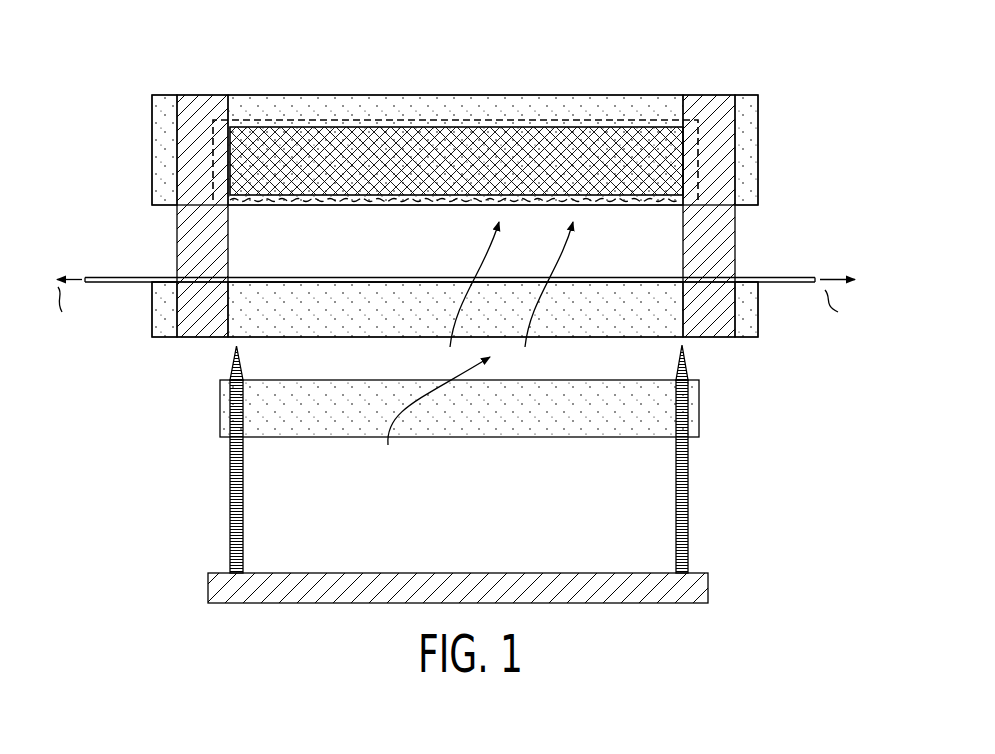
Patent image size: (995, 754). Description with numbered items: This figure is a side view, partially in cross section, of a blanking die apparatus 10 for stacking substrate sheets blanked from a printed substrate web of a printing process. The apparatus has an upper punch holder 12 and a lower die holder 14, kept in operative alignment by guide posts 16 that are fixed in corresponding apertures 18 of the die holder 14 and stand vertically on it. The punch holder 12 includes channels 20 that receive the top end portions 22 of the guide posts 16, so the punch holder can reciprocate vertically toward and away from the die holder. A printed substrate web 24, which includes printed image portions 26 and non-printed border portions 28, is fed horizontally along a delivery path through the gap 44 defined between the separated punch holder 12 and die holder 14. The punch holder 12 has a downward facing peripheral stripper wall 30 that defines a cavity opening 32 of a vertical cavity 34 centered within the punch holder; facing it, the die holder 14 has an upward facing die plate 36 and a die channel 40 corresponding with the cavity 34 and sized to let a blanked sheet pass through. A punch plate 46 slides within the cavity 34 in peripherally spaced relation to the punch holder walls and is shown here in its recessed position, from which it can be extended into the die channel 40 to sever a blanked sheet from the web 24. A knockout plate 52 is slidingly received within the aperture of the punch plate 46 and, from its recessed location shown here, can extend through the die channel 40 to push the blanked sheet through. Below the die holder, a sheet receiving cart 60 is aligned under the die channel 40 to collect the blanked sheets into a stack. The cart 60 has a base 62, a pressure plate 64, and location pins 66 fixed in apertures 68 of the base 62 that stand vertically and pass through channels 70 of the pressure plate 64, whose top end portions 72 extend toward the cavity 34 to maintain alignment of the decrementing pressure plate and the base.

The blanking die apparatus 10 is at (770, 110).
The punch holder 12 is at (152, 100).
The die holder 14 is at (152, 317).
The guide posts 16 is at (182, 222).
The apertures 18 is at (190, 333).
The channels 20 is at (215, 100).
The top end portions 22 is at (160, 148).
The printed substrate web 24 is at (92, 275).
The printed image portions 26 is at (426, 277).
The non-printed border portions 28 is at (238, 277).
The peripheral stripper wall 30 is at (742, 205).
The cavity opening 32 is at (544, 298).
The vertical cavity 34 is at (471, 298).
The die plate 36 is at (746, 285).
The die channel 40 is at (434, 416).
The gap 44 is at (256, 214).
The punch plate 46 is at (297, 122).
The knockout plate 52 is at (436, 150).
The sheet receiving cart 60 is at (148, 513).
The base 62 is at (708, 588).
The pressure plate 64 is at (699, 432).
The location pins 66 is at (243, 492).
The apertures 68 is at (232, 572).
The channels 70 is at (237, 428).
The top end portions 72 is at (242, 366).